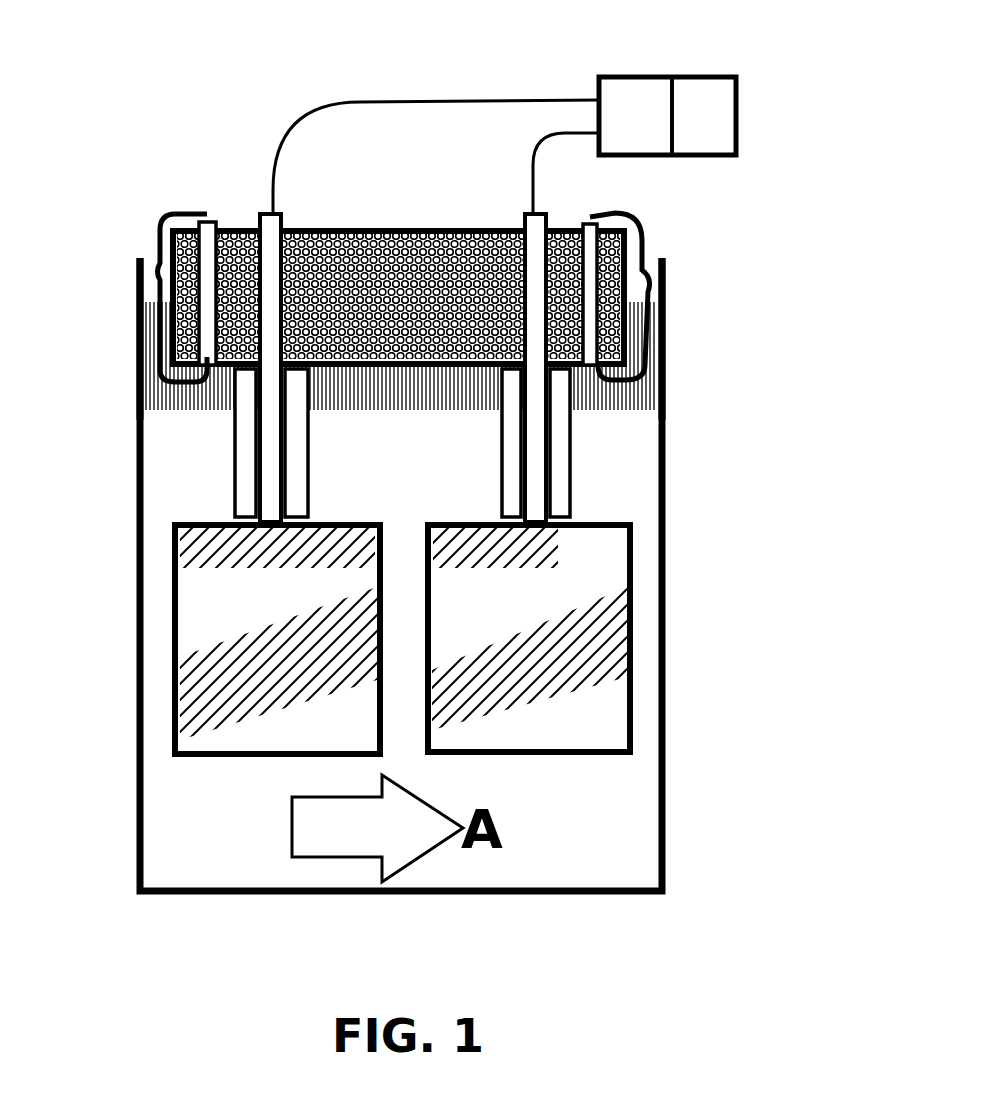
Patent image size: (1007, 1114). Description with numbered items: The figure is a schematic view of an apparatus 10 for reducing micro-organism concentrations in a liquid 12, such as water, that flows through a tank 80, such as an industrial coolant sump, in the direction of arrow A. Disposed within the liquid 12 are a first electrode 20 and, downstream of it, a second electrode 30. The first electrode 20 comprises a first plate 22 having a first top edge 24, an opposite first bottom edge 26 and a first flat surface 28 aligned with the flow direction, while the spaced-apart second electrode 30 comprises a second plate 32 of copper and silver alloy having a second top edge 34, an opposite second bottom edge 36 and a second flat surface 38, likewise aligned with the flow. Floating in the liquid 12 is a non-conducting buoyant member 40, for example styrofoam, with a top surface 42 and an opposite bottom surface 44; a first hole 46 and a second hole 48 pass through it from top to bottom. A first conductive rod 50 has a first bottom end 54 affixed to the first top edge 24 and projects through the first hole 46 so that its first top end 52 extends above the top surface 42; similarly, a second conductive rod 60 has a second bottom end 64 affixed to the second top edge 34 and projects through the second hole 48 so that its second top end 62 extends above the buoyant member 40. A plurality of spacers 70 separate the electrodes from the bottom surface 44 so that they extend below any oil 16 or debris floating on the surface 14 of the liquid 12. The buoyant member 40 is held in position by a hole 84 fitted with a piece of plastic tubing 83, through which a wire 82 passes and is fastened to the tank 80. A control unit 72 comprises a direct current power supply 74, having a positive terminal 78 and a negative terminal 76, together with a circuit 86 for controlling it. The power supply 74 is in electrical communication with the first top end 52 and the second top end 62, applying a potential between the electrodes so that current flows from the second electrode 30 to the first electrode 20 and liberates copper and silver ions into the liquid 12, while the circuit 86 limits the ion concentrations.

The apparatus 10 is at (212, 128).
The liquid 12 is at (401, 377).
The surface of the liquid 14 is at (158, 282).
The oil 16 is at (652, 372).
The first electrode 20 is at (225, 665).
The first plate 22 is at (245, 757).
The first top edge 24 is at (352, 526).
The first bottom edge 26 is at (315, 750).
The first flat surface 28 is at (278, 636).
The second electrode 30 is at (578, 664).
The second plate 32 is at (470, 755).
The second top edge 34 is at (620, 526).
The second bottom edge 36 is at (560, 750).
The second flat surface 38 is at (530, 636).
The buoyant member 40 is at (450, 226).
The top surface 42 is at (412, 228).
The bottom surface 44 is at (458, 368).
The first hole 46 is at (227, 274).
The second hole 48 is at (556, 218).
The first conductive rod 50 is at (290, 218).
The first top end 52 is at (262, 210).
The first bottom end 54 is at (272, 528).
The second conductive rod 60 is at (520, 215).
The second top end 62 is at (538, 210).
The second bottom end 64 is at (540, 528).
The spacers 70 is at (312, 440).
The control unit 72 is at (745, 133).
The direct current power supply 74 is at (657, 90).
The negative terminal 76 is at (612, 82).
The positive terminal 78 is at (633, 133).
The tank 80 is at (137, 438).
The wire 82 is at (170, 218).
The plastic tubing 83 is at (212, 405).
The hole 84 is at (190, 218).
The circuit 86 is at (727, 105).